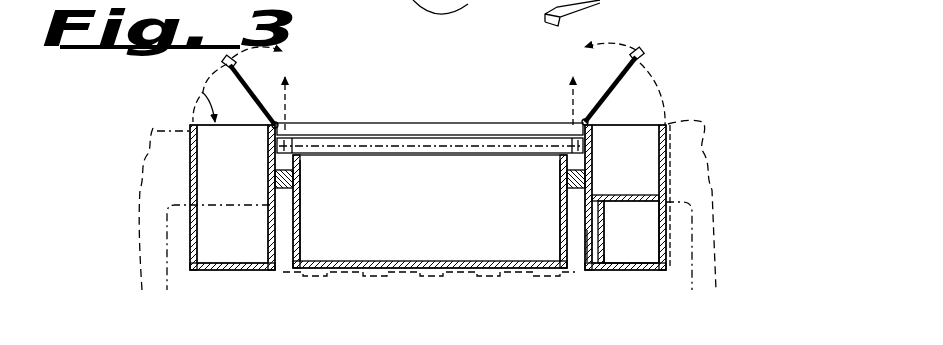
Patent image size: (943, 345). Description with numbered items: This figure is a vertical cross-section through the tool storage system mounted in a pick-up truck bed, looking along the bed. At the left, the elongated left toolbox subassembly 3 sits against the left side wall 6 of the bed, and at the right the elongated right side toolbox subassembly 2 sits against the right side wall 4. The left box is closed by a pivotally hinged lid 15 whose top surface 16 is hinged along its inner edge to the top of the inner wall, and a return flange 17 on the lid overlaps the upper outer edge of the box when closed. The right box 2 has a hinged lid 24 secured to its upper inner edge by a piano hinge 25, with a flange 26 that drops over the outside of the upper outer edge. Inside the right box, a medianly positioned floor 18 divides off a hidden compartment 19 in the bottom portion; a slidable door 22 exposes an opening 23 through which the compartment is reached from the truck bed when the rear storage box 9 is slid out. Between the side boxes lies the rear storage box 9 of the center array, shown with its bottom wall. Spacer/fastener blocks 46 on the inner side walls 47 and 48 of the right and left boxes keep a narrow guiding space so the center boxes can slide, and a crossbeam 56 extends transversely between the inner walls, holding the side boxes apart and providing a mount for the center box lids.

The right side toolbox subassembly 2 is at (650, 123).
The left toolbox subassembly 3 is at (201, 93).
The right side wall 4 is at (703, 120).
The left side wall 6 is at (153, 128).
The rear storage box 9 is at (374, 243).
The lid 15 is at (251, 92).
The top surface 16 is at (242, 82).
The return flange 17 is at (222, 62).
The floor 18 is at (628, 195).
The compartment 19 is at (651, 241).
The door 22 is at (600, 258).
The opening 23 is at (593, 235).
The hinged lid 24 is at (602, 100).
The piano hinge 25 is at (287, 105).
The flange 26 is at (644, 58).
The spacer/fastener blocks 46 is at (275, 182).
The inner side wall 47 is at (567, 205).
The inner side wall 48 is at (283, 202).
The crossbeam 56 is at (412, 151).